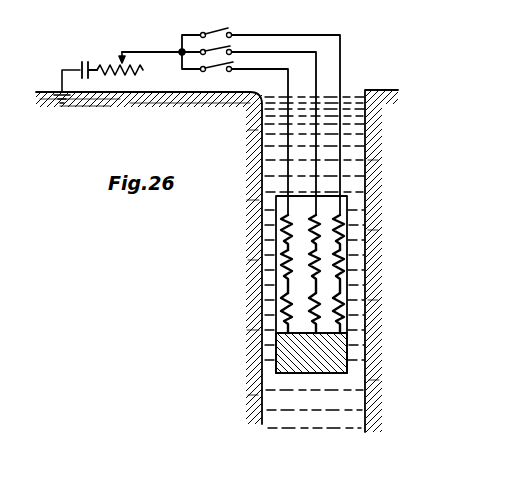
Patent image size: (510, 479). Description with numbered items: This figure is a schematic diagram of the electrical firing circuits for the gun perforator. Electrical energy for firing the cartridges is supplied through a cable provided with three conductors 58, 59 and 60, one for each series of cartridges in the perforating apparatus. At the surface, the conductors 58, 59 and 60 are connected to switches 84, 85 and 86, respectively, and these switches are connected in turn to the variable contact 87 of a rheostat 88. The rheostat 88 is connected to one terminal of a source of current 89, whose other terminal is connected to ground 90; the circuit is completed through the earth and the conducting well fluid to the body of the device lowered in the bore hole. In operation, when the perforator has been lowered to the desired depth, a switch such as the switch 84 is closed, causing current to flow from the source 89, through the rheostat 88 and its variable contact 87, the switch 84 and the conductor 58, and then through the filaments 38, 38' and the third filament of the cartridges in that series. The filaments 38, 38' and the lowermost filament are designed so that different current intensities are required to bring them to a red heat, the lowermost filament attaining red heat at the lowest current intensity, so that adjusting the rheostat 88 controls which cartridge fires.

The ground 90 is at (60, 90).
The source of current 89 is at (83, 62).
The rheostat 88 is at (115, 76).
The variable contact 87 is at (122, 58).
The switch 84 is at (210, 72).
The switch 85 is at (209, 47).
The switch 86 is at (228, 32).
The conductor 58 is at (288, 135).
The conductor 59 is at (316, 152).
The conductor 60 is at (340, 169).
The filament 38 is at (274, 232).
The filament 38' is at (274, 269).